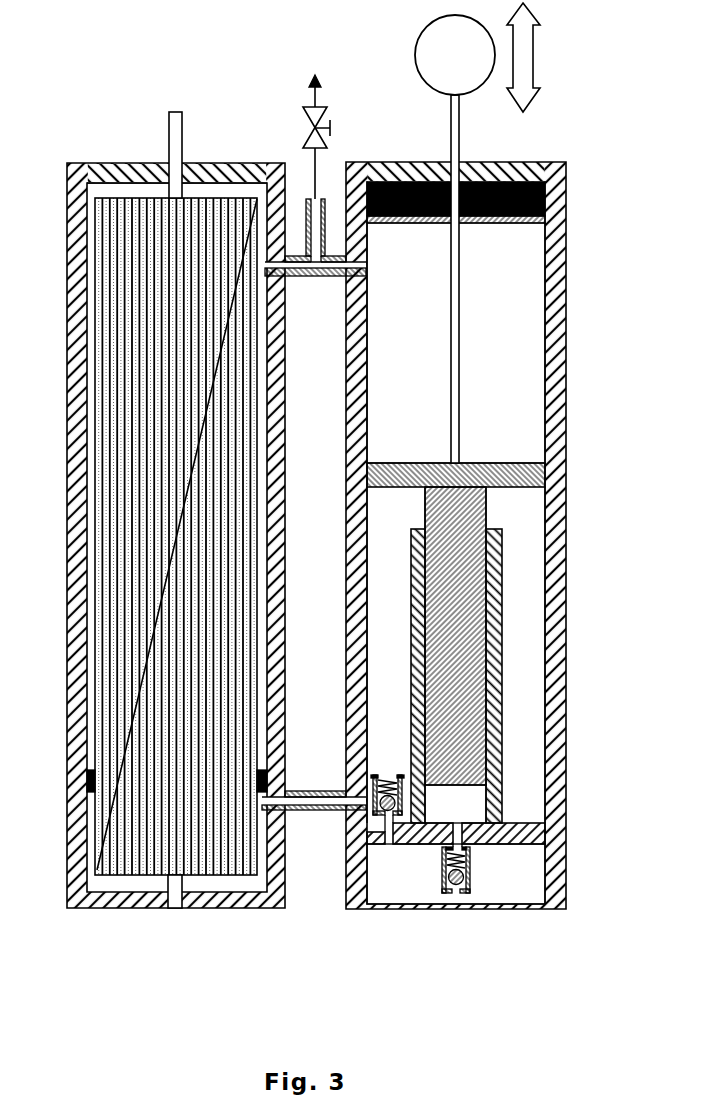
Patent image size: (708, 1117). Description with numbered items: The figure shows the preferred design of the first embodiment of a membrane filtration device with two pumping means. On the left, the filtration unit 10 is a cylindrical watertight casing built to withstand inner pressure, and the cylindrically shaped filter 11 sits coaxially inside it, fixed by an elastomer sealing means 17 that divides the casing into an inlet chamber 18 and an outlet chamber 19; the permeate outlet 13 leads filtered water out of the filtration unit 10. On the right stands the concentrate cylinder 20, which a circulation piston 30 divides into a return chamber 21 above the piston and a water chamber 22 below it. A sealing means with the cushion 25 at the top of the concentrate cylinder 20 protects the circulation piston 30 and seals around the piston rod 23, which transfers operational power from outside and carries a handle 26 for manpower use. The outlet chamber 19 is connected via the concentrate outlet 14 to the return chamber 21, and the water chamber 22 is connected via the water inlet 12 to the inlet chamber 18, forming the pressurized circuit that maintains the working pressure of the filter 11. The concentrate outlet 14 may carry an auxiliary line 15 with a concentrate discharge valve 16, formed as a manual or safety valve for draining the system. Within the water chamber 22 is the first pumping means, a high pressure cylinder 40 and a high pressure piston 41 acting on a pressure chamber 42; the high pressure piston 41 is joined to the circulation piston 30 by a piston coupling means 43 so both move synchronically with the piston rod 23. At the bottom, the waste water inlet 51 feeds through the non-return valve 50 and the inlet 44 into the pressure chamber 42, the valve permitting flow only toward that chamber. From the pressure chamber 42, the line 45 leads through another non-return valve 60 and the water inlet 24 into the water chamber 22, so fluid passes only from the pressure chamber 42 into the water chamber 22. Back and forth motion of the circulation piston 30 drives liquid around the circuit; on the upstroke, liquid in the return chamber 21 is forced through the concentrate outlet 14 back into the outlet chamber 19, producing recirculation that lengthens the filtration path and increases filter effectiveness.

The filtration unit 10 is at (75, 162).
The filter 11 is at (112, 245).
The water inlet 12 is at (300, 810).
The permeate outlet 13 is at (175, 128).
The concentrate outlet 14 is at (332, 276).
The auxiliary line 15 is at (322, 200).
The concentrate discharge valve 16 is at (308, 127).
The sealing means 17 is at (90, 780).
The inlet chamber 18 is at (215, 898).
The outlet chamber 19 is at (227, 190).
The concentrate cylinder 20 is at (567, 490).
The return chamber 21 is at (508, 272).
The water chamber 22 is at (518, 627).
The piston rod 23 is at (452, 143).
The water inlet 24 is at (387, 773).
The sealing means with the cushion 25 is at (432, 222).
The handle 26 is at (438, 60).
The circulation piston 30 is at (525, 462).
The high pressure cylinder 40 is at (418, 630).
The high pressure piston 41 is at (425, 520).
The pressure chamber 42 is at (478, 812).
The piston coupling means 43 is at (487, 520).
The inlet 44 is at (462, 830).
The line 45 is at (388, 838).
The non-return valve 50 is at (470, 870).
The waste water inlet 51 is at (456, 893).
The non-return valve 60 is at (373, 785).